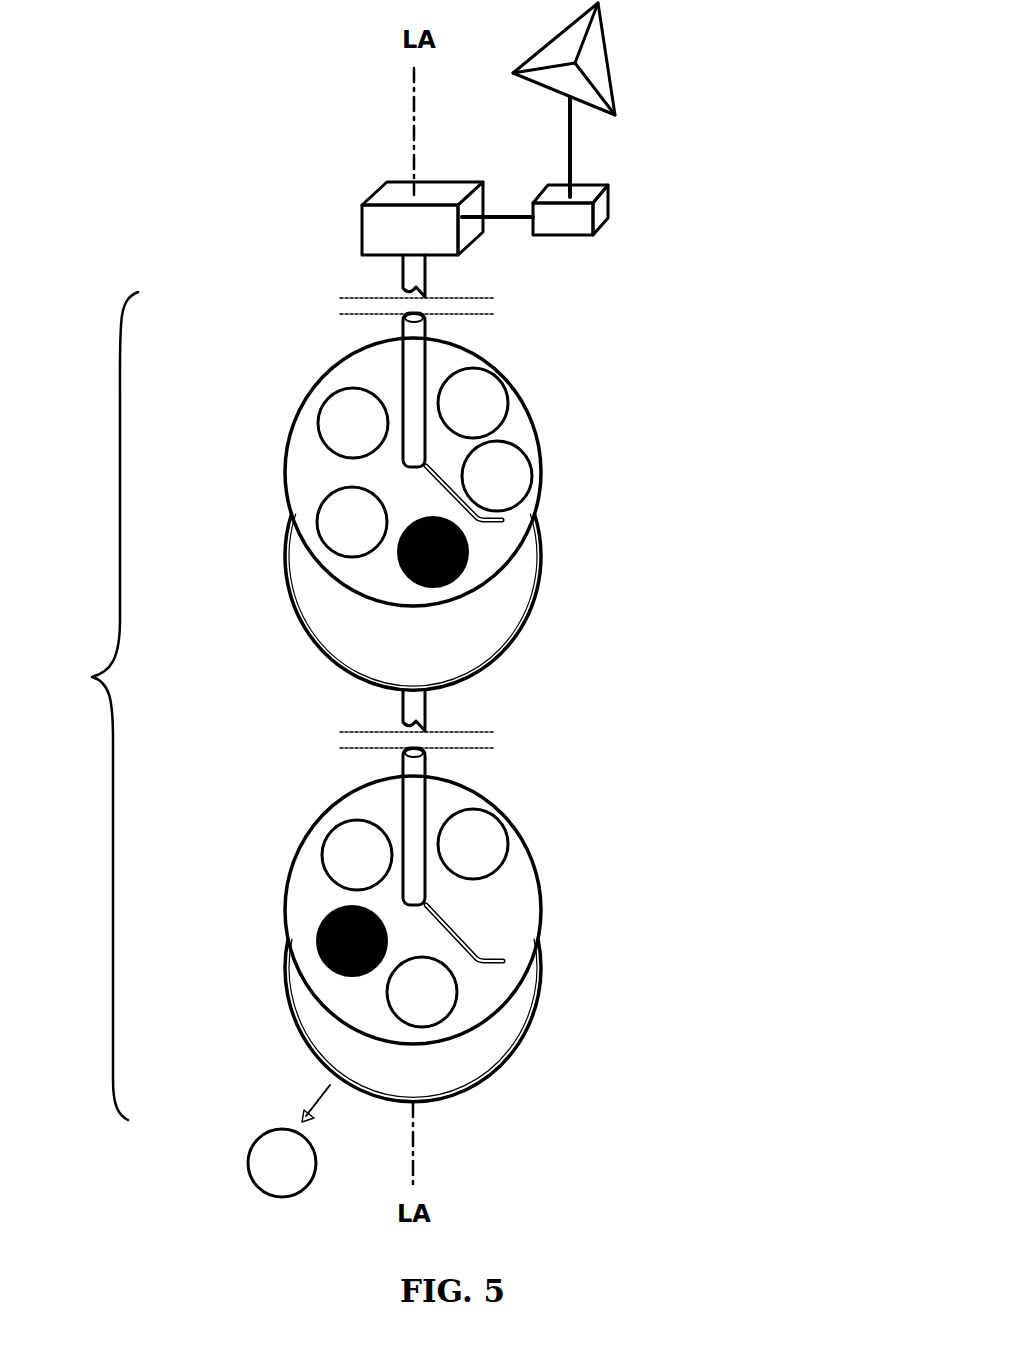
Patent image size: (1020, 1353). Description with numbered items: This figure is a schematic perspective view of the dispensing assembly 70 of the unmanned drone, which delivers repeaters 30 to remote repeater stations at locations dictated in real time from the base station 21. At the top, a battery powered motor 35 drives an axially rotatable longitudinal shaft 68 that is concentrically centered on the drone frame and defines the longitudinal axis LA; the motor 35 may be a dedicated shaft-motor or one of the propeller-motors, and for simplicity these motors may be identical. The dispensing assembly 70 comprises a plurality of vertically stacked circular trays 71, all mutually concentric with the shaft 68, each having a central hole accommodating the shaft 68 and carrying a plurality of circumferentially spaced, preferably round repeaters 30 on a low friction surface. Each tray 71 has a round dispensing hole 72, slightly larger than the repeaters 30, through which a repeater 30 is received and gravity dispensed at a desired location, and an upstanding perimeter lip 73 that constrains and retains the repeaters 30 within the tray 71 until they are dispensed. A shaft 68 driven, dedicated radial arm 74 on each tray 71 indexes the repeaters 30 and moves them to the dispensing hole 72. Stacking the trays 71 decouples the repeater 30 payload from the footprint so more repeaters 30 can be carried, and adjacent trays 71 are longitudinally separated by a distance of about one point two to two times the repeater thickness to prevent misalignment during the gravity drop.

The base station 21 is at (606, 77).
The repeater 30 is at (612, 208).
The motor 35 is at (360, 232).
The shaft 68 is at (413, 358).
The dispensing assembly 70 is at (93, 706).
The circular tray 71 is at (515, 432).
The dispensing hole 72 is at (400, 565).
The upstanding lip 73 is at (417, 658).
The radial arm 74 is at (502, 522).